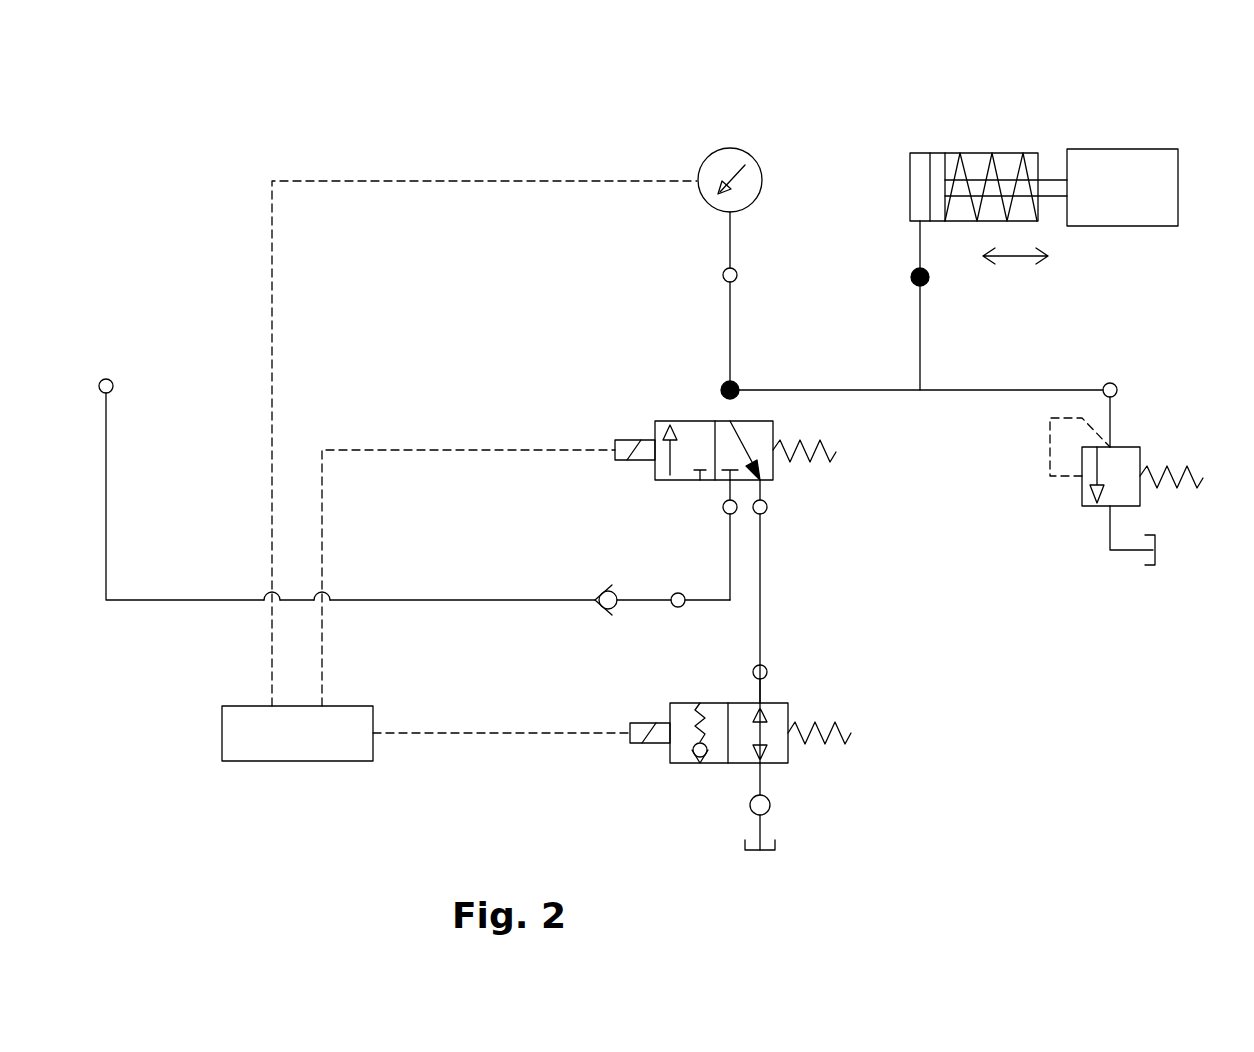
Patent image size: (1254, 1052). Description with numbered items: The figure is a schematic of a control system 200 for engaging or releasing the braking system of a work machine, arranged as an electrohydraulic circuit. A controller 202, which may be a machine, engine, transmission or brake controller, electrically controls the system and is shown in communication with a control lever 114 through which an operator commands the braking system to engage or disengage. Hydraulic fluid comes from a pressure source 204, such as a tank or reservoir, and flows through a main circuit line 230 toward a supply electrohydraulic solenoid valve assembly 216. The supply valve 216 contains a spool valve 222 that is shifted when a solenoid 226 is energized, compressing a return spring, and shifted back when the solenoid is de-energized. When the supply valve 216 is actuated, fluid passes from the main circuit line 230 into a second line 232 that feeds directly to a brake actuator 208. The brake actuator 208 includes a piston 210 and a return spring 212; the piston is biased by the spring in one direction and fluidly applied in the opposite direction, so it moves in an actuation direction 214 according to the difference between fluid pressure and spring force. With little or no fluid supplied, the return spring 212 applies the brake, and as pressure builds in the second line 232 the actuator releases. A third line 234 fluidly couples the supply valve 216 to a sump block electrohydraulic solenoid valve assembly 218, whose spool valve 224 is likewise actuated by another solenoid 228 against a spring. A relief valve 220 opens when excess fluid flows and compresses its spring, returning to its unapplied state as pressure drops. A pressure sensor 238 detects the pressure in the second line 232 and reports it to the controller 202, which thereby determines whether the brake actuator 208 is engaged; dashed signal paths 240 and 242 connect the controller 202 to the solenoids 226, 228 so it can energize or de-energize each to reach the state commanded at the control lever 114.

The control system 200 is at (287, 155).
The controller 202 is at (297, 761).
The pressure source 204 is at (114, 385).
The brake actuator 208 is at (937, 129).
The piston 210 is at (935, 185).
The return spring 212 is at (948, 150).
The control lever 114 is at (1122, 228).
The actuation direction 214 is at (1025, 262).
The supply electrohydraulic solenoid valve assembly 216 is at (772, 380).
The sump block electrohydraulic solenoid valve assembly 218 is at (762, 796).
The relief valve 220 is at (1107, 519).
The spool valve 222 is at (685, 482).
The spool valve 224 is at (715, 765).
The solenoid 226 is at (637, 440).
The solenoid 228 is at (640, 723).
The main circuit line 230 is at (108, 497).
The second line 232 is at (830, 388).
The third line 234 is at (762, 594).
The pressure sensor 238 is at (709, 156).
The first control signal line 240 is at (468, 450).
The second control signal line 242 is at (500, 733).